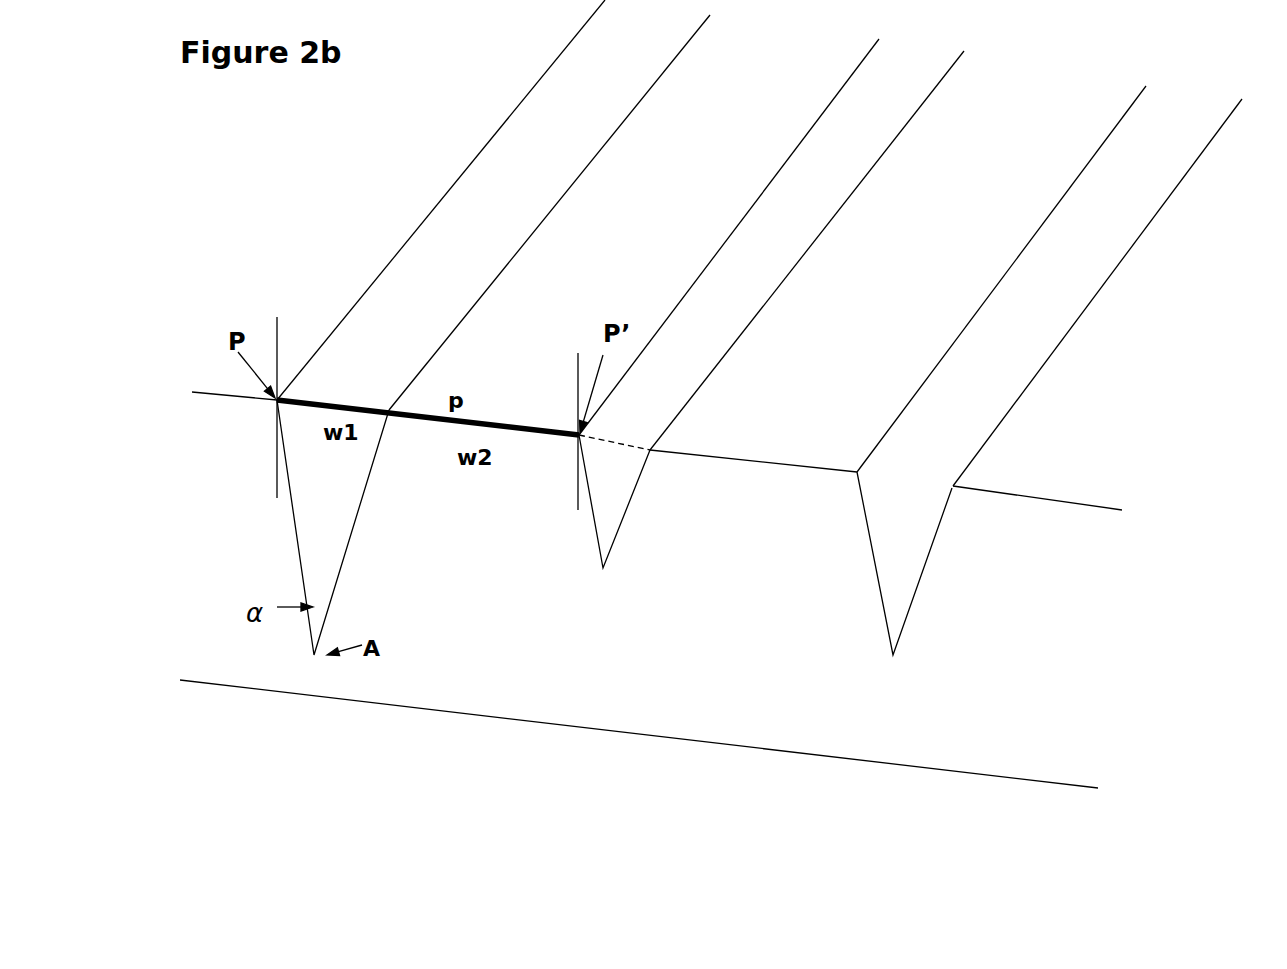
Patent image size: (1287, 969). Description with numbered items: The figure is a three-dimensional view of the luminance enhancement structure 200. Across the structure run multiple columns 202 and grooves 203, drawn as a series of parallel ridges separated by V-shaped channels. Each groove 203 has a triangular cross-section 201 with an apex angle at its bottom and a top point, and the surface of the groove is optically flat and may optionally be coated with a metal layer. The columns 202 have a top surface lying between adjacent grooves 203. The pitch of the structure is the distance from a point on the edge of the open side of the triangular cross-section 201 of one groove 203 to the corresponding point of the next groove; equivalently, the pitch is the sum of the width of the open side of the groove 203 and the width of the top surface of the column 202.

The luminance enhancement structure 200 is at (326, 215).
The triangular cross-section 201 is at (627, 506).
The column 202 is at (746, 559).
The groove 203 is at (900, 582).